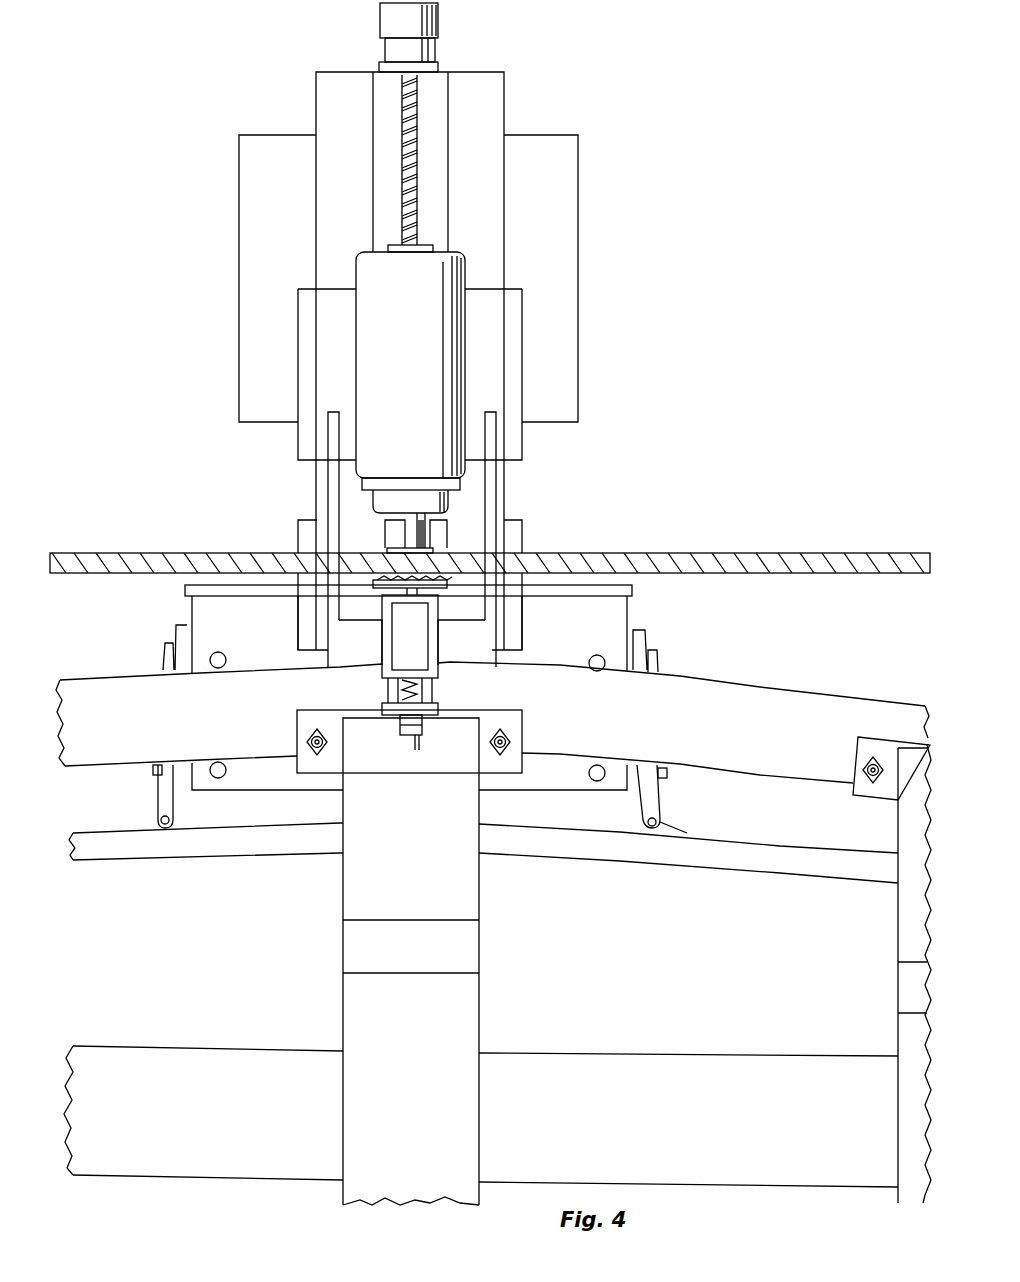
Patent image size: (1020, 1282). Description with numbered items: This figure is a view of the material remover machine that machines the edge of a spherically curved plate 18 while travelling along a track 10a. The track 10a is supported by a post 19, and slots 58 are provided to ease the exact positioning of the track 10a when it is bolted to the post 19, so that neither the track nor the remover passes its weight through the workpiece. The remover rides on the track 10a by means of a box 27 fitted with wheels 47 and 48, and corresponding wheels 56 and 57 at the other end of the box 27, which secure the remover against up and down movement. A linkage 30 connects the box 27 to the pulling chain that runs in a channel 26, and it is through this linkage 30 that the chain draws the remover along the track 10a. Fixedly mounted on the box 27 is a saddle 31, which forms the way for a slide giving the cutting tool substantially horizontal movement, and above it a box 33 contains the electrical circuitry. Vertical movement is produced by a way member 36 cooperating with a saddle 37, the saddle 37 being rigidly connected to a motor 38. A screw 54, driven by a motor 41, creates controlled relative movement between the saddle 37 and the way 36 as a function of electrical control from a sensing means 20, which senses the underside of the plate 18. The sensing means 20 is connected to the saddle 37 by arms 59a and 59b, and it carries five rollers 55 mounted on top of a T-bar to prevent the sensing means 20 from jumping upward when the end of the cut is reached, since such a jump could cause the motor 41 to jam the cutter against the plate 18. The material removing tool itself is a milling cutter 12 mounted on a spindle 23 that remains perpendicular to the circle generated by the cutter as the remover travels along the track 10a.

The motor 41 is at (438, 22).
The screw 54 is at (417, 113).
The way member 36 is at (498, 121).
The box 33 is at (569, 198).
The saddle 37 is at (516, 345).
The motor 38 is at (414, 390).
The arm 59b is at (328, 480).
The arm 59a is at (497, 480).
The milling cutter 12 is at (395, 548).
The spindle 23 is at (425, 529).
The saddle 31 is at (516, 526).
The spherically curved plate 18 is at (621, 548).
The sensing means 20 is at (373, 587).
The rollers 55 is at (450, 580).
The wheel 56 is at (225, 655).
The box 27 is at (562, 641).
The wheel 48 is at (605, 658).
The slots 58 is at (505, 733).
The track 10a is at (722, 737).
The linkage 30 is at (155, 827).
The wheel 57 is at (220, 778).
The wheel 47 is at (596, 781).
The channel 26 is at (270, 846).
The post 19 is at (478, 884).